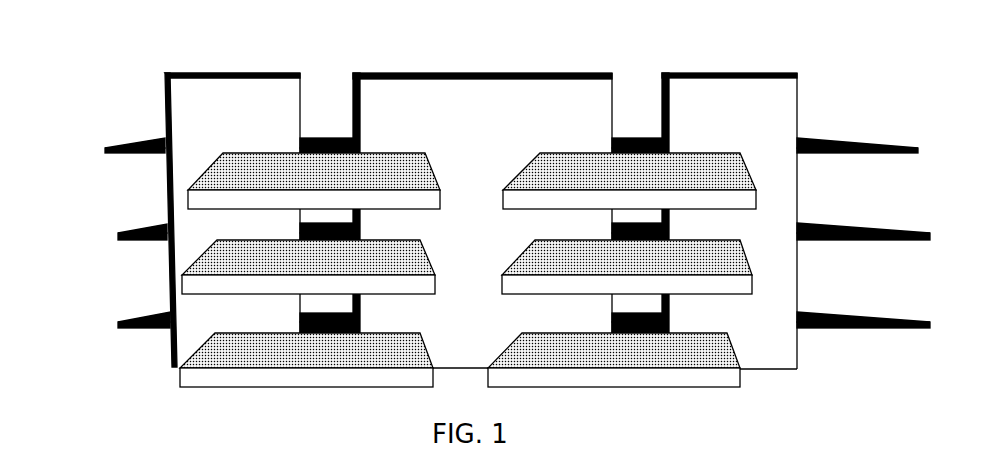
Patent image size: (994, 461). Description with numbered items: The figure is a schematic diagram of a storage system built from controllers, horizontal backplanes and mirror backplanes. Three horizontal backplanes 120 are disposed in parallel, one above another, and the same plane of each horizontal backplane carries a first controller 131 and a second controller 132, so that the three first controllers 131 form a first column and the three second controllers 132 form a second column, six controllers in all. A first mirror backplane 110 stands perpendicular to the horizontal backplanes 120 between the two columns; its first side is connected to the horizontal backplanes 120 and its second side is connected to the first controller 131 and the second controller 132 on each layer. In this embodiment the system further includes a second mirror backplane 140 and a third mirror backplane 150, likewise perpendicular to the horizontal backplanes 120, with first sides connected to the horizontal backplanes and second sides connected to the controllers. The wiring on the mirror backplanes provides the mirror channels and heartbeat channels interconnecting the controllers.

The first mirror backplane 110 is at (463, 76).
The horizontal backplanes 120 is at (137, 142).
The first controller 131 is at (300, 162).
The second controller 132 is at (612, 162).
The second mirror backplane 140 is at (236, 76).
The third mirror backplane 150 is at (722, 76).